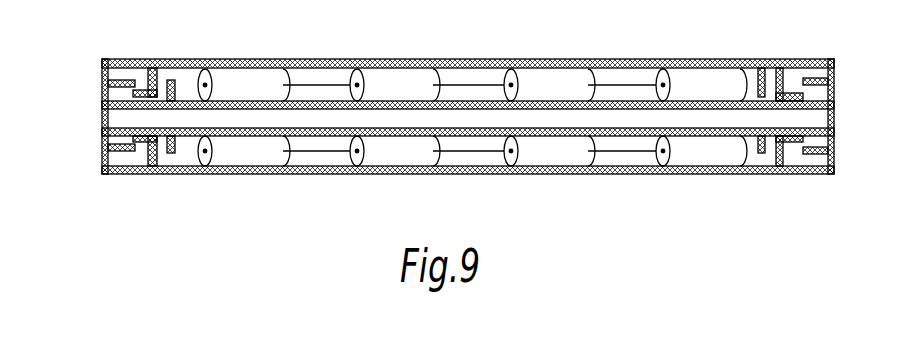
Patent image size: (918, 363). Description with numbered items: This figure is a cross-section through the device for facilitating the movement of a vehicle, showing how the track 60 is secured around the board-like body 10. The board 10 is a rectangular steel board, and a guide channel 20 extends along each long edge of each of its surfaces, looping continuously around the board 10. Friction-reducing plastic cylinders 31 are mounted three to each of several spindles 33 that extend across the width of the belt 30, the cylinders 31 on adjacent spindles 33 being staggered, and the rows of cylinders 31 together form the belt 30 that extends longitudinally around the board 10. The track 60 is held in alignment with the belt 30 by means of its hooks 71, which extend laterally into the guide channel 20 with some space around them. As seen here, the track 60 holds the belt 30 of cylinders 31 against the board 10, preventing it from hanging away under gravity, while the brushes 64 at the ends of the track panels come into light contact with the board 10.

The board-like body 10 is at (537, 117).
The guide channel 20 is at (802, 101).
The belt 30 is at (472, 120).
The cylinders 31 is at (390, 78).
The spindles 33 is at (472, 83).
The track 60 is at (158, 60).
The brushes 64 is at (103, 76).
The hooks 71 is at (787, 77).